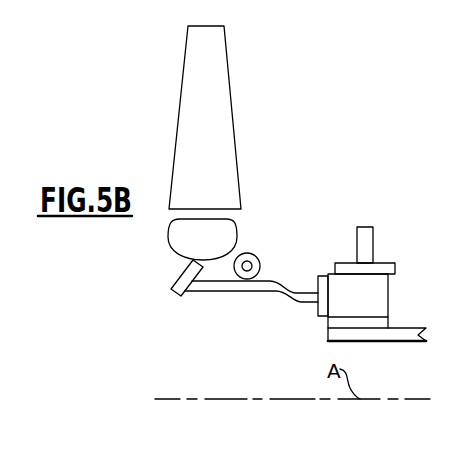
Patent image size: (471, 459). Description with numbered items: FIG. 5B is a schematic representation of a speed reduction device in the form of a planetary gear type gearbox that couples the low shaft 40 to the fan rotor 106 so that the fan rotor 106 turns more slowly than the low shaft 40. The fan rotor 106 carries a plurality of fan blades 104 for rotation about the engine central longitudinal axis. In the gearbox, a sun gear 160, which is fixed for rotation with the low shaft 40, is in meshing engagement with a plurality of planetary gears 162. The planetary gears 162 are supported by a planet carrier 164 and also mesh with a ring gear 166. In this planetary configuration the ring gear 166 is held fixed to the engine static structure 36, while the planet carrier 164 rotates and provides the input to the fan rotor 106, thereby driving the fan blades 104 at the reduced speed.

The fan blades 104 is at (220, 124).
The fan rotor 106 is at (180, 281).
The engine static structure 36 is at (373, 239).
The ring gear 166 is at (396, 270).
The planetary gears 162 is at (380, 293).
The planet carrier 164 is at (322, 305).
The sun gear 160 is at (383, 323).
The low shaft 40 is at (398, 341).